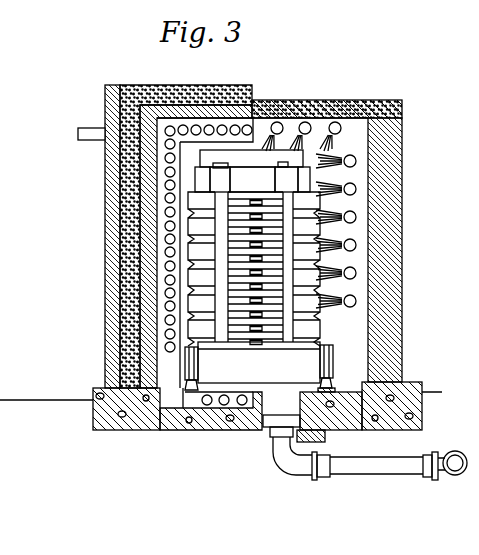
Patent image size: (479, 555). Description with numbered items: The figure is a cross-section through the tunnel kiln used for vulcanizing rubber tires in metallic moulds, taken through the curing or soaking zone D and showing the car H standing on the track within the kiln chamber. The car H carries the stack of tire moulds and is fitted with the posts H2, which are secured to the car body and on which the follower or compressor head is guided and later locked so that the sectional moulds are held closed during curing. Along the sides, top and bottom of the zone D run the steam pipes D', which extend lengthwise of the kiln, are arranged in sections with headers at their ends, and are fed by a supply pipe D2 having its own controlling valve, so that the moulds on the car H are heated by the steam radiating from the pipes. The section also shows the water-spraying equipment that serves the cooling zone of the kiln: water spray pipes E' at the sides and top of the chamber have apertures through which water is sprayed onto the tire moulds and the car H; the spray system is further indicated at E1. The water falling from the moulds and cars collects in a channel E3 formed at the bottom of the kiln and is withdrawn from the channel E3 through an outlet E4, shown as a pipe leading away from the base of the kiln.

The curing or soaking zone D is at (217, 246).
The supply pipe D2 is at (88, 128).
The steam pipes D' is at (159, 264).
The spray nozzle supply pipe E1 is at (353, 177).
The water spray pipes E' is at (370, 221).
The car H is at (260, 271).
The posts H2 is at (285, 203).
The channel E3 is at (240, 418).
The outlet E4 is at (413, 456).